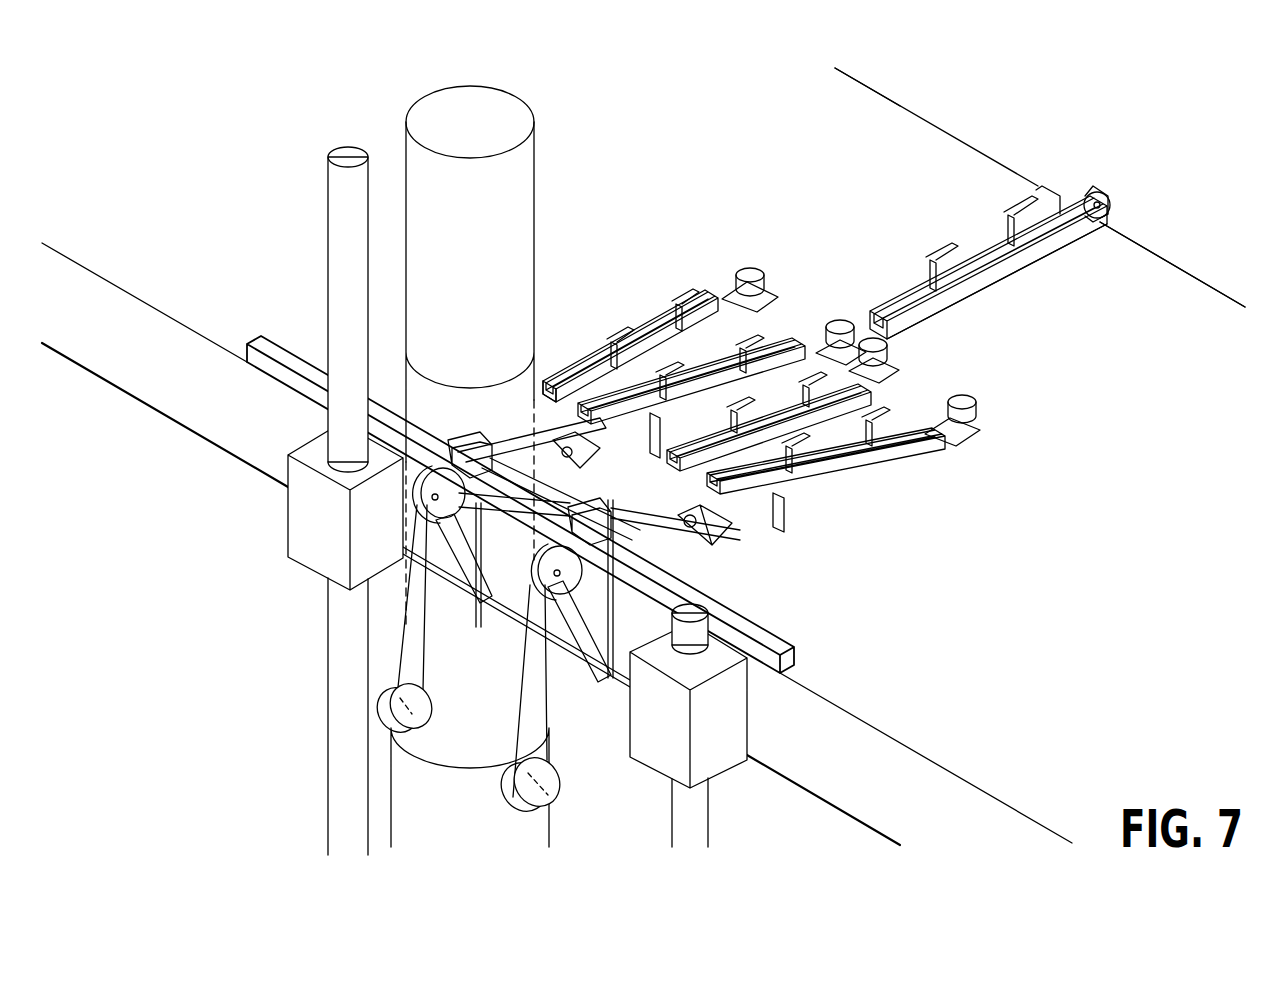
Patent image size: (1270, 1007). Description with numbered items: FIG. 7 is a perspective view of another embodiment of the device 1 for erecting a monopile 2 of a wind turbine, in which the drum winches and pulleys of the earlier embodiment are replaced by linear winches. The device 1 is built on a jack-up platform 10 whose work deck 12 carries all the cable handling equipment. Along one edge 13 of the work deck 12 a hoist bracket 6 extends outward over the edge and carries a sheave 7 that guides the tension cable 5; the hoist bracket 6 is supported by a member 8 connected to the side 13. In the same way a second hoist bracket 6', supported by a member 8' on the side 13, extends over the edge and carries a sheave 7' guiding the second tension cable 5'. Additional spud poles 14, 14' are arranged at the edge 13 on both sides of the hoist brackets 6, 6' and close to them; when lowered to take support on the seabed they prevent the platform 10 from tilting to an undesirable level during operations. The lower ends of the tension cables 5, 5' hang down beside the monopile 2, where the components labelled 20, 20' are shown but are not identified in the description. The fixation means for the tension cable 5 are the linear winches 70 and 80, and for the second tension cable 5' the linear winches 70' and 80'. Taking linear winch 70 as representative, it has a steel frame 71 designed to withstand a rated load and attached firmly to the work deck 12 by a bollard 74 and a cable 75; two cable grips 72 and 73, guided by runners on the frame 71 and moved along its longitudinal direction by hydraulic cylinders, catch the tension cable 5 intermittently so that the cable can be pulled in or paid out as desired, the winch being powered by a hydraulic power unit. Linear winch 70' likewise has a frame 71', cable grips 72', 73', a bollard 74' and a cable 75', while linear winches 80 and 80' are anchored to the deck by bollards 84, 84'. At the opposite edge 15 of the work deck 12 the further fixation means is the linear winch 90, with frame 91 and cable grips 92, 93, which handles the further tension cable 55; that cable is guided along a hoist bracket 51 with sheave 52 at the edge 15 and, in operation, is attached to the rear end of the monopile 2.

The device 1 is at (159, 141).
The monopile 2 is at (548, 143).
The tension cable 5 is at (599, 627).
The second tension cable 5' is at (501, 536).
The hoist bracket 6 is at (560, 589).
The hoist bracket 6' is at (524, 435).
The sheave 7 is at (555, 549).
The sheave 7' is at (439, 469).
The member 8 is at (579, 642).
The member 8' is at (461, 566).
The jack-up platform 10 is at (980, 131).
The work deck 12 is at (676, 139).
The edge 13 is at (230, 409).
The additional spud pole 14 is at (676, 725).
The additional spud pole 14' is at (331, 501).
The edge 15 is at (1182, 249).
The pulley 20 is at (548, 795).
The pulley 20' is at (366, 711).
The hoist bracket 51 is at (1110, 204).
The sheave 52 is at (1104, 183).
The further tension cable 55 is at (1058, 203).
The linear winch 70 is at (826, 484).
The linear winch 70' is at (630, 357).
The steel frame 71 is at (733, 533).
The steel frame 71' is at (557, 365).
The cable grip 72 is at (898, 451).
The cable grip 72' is at (672, 301).
The cable grip 73 is at (817, 476).
The cable grip 73' is at (605, 338).
The bollard 74 is at (966, 386).
The bollard 74' is at (754, 260).
The cable 75 is at (962, 447).
The cable 75' is at (736, 271).
The linear winch 80 is at (802, 421).
The linear winch 80' is at (703, 402).
The bollard 84 is at (874, 327).
The bollard 84' is at (841, 318).
The linear winch 90 is at (1038, 281).
The steel frame 91 is at (987, 296).
The cable grip 92 is at (925, 287).
The cable grip 93 is at (1007, 230).